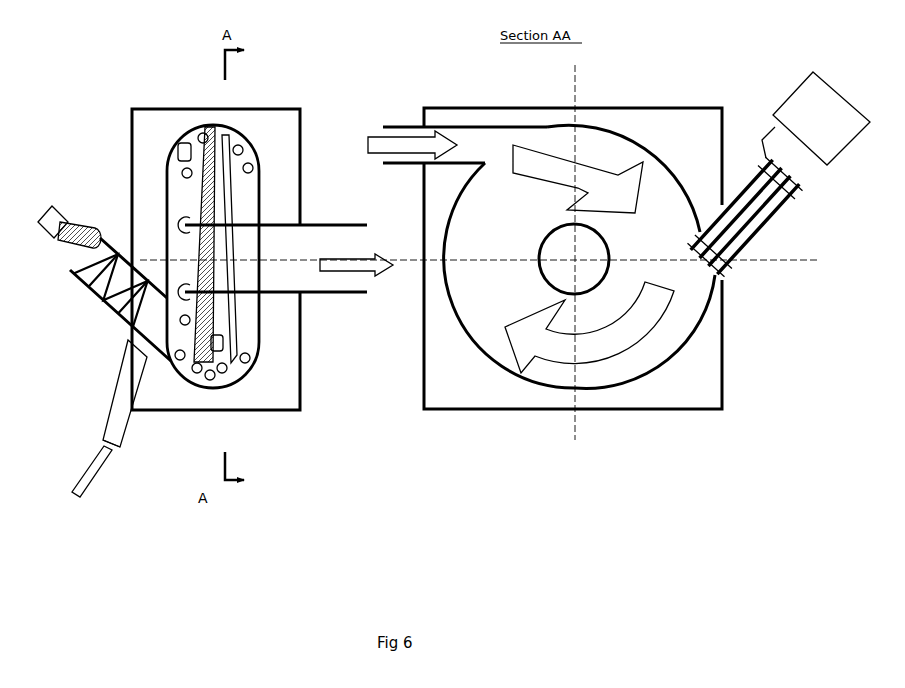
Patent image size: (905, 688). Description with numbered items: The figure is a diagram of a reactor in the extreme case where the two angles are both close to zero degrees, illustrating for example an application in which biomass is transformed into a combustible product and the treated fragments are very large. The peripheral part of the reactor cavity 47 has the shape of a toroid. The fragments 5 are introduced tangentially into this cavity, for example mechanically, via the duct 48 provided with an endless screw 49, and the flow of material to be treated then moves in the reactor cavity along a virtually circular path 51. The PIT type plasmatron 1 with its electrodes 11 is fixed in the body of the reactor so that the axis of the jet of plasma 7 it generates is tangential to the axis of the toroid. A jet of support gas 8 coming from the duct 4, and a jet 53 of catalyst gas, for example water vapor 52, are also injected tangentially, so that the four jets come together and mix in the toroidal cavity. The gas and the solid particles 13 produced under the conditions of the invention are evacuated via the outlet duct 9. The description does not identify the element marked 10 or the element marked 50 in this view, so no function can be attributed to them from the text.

The PIT type plasmatron 1 is at (739, 163).
The duct 4 is at (406, 122).
The fragments 5 is at (183, 146).
The jet of plasma 7 is at (546, 358).
The jet of support gas 8 is at (541, 143).
The outlet duct 9 is at (538, 280).
The outlet device 10 is at (850, 142).
The electrodes 11 is at (717, 285).
The gas and solid particles 13 is at (363, 252).
The reactor cavity 47 is at (663, 104).
The duct 48 is at (70, 284).
The endless screw 49 is at (93, 284).
The rotor housing 50 is at (165, 233).
The virtually circular path 51 is at (124, 382).
The water vapor 52 is at (88, 458).
The jet of catalyst gas 53 is at (125, 452).